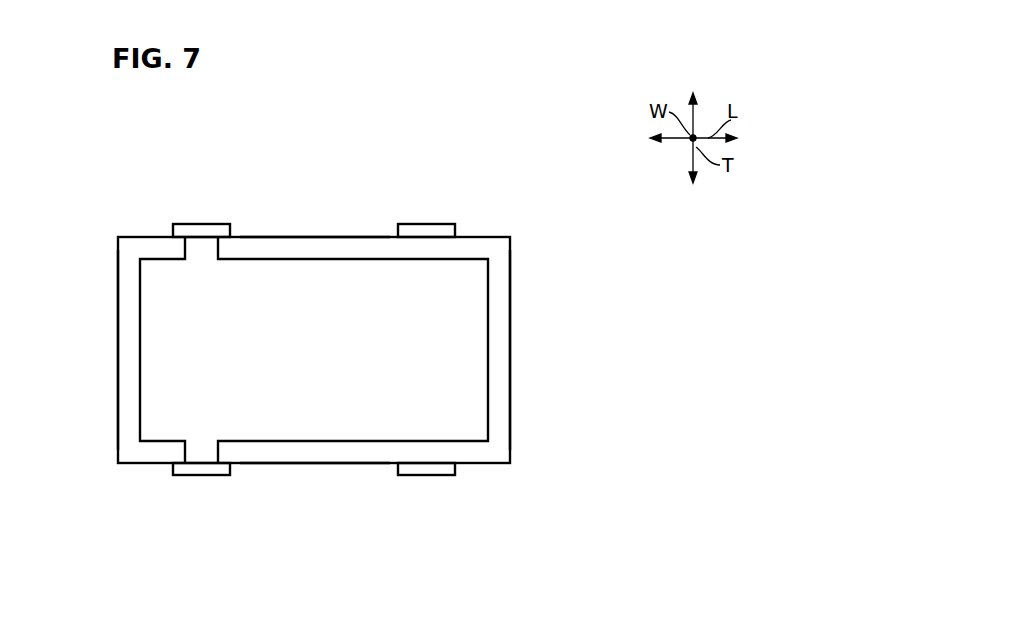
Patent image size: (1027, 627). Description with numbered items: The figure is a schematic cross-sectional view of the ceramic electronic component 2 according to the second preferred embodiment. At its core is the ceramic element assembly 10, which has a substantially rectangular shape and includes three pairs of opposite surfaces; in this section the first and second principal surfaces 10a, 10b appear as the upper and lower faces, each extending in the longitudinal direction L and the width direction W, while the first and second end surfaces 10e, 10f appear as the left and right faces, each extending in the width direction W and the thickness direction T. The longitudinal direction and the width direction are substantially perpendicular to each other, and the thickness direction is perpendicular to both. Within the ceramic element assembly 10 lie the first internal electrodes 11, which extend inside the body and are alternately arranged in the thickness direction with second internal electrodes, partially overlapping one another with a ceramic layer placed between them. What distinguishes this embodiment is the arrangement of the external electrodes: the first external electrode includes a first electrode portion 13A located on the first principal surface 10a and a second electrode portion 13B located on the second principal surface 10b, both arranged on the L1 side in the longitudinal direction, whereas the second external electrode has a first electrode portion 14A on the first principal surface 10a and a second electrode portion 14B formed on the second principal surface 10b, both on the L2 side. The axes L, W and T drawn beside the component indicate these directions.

The ceramic electronic component 2 is at (538, 204).
The ceramic element assembly 10 is at (334, 237).
The first principal surface 10a is at (287, 237).
The second principal surface 10b is at (306, 464).
The first end surface 10e is at (118, 354).
The second end surface 10f is at (510, 341).
The first internal electrode 11 is at (488, 393).
The first electrode portion of the first external electrode 13A is at (204, 224).
The second electrode portion of the first external electrode 13B is at (193, 476).
The first electrode portion of the second external electrode 14A is at (434, 224).
The second electrode portion of the second external electrode 14B is at (428, 476).